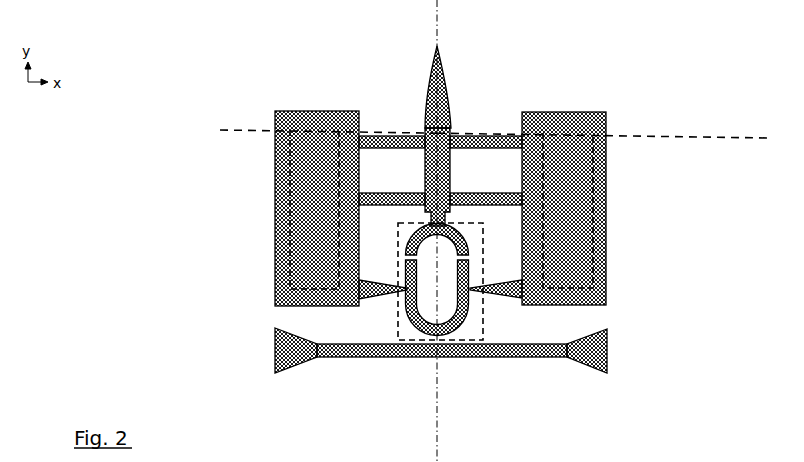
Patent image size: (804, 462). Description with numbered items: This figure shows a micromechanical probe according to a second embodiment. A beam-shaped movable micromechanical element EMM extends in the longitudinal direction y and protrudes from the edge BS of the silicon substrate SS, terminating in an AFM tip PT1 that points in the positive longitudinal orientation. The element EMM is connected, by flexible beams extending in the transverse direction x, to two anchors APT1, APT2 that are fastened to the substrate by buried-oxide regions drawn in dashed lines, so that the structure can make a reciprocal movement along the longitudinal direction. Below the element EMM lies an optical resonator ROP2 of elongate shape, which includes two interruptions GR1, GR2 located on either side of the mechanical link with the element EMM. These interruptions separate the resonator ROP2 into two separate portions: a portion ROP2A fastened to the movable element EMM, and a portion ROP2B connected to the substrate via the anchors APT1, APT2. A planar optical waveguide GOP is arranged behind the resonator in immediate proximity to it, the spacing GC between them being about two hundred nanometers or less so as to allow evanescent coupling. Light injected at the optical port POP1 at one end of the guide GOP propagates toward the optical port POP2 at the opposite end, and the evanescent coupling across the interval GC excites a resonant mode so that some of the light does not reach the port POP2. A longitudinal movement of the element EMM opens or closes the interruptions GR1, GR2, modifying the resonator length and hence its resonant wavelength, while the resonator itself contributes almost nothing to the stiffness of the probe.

The AFM tip PT1 is at (447, 88).
The movable micromechanical element EMM is at (469, 116).
The edge of the substrate BS is at (536, 180).
The anchor APT1 is at (268, 130).
The anchor APT2 is at (675, 138).
The optical resonator ROP2 is at (619, 200).
The movable portion of the resonator ROP2A is at (607, 114).
The fixed portion of the resonator ROP2B is at (607, 365).
The interruption GR1 is at (407, 255).
The interruption GR2 is at (485, 247).
The silicon substrate SS is at (594, 231).
The optical port POP1 is at (272, 343).
The optical port POP2 is at (607, 353).
The planar optical waveguide GOP is at (318, 358).
The spacing GC is at (434, 325).